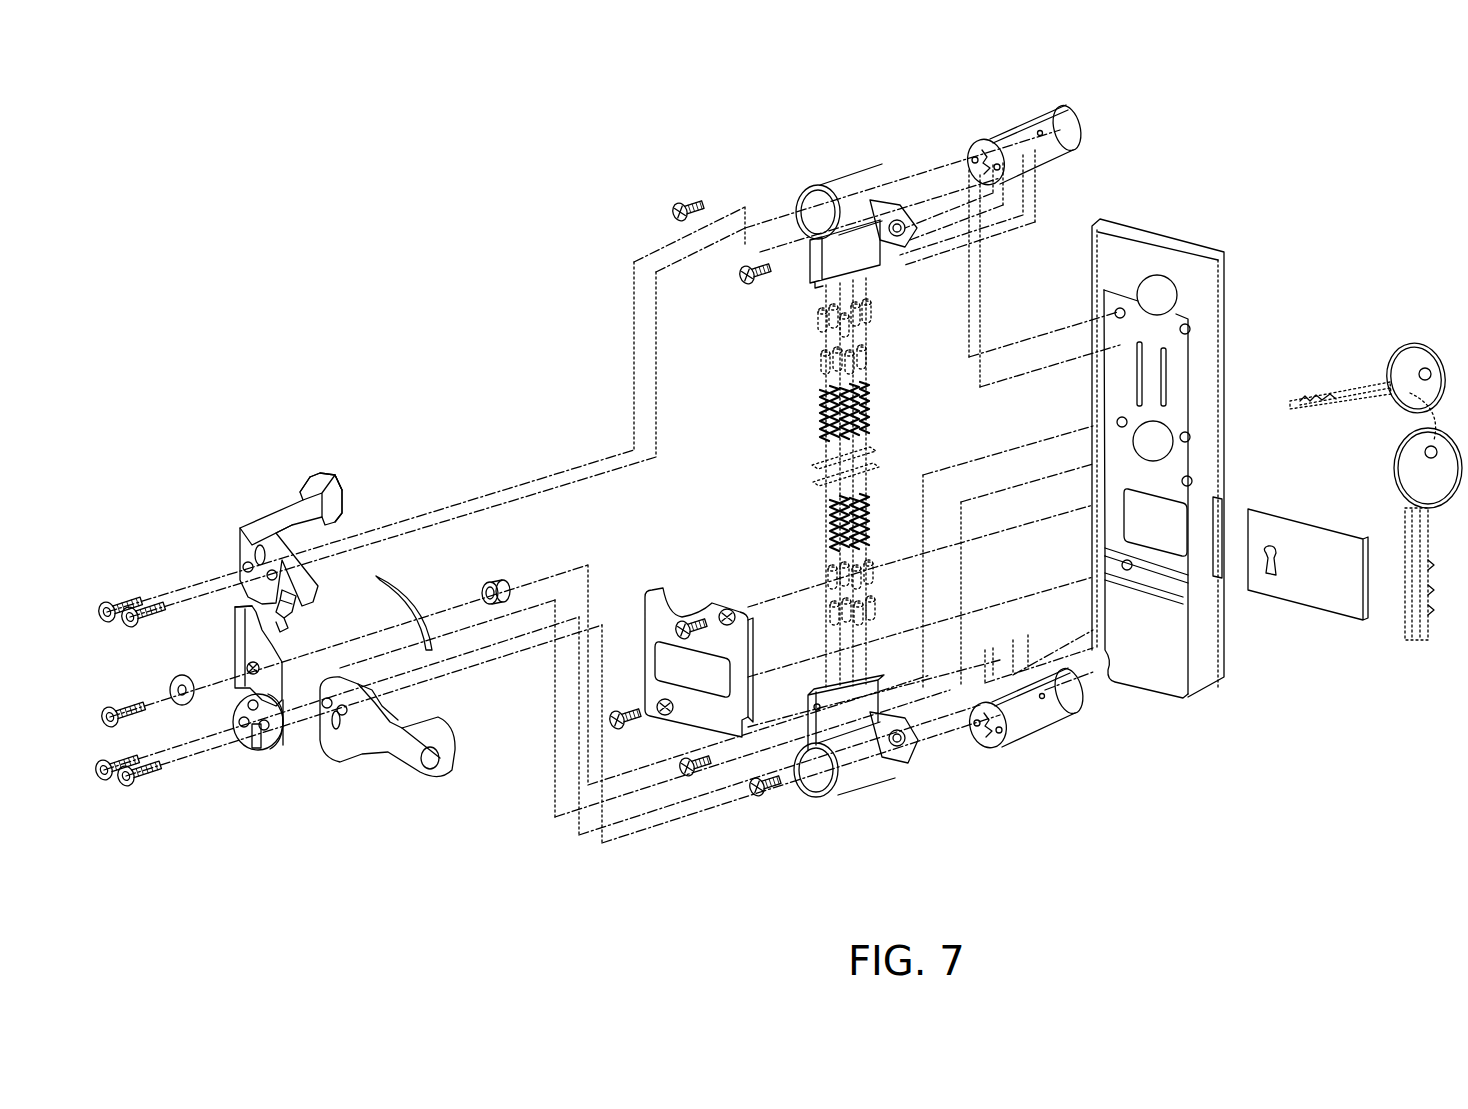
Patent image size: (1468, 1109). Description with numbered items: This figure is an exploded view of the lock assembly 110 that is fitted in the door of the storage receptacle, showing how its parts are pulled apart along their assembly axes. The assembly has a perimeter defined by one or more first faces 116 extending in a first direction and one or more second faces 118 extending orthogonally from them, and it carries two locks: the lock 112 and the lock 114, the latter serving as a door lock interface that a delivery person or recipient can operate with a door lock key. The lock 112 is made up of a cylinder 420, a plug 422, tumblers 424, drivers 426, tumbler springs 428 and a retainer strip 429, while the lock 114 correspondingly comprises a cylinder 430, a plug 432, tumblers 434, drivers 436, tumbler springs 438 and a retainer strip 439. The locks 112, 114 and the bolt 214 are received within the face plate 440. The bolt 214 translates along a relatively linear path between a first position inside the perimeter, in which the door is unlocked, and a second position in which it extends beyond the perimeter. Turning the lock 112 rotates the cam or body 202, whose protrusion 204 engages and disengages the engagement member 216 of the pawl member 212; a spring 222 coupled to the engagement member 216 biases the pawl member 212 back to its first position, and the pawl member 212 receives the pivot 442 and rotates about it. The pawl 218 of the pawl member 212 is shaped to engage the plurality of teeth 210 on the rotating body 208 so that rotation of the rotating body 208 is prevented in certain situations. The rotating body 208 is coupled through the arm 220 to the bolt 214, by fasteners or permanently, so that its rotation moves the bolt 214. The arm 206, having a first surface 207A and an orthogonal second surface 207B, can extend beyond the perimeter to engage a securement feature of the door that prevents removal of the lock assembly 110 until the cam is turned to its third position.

The lock assembly 110 is at (356, 156).
The lock 112 is at (866, 140).
The lock 114 is at (972, 780).
The first faces 116 is at (1213, 343).
The second faces 118 is at (1217, 245).
The body 202 is at (242, 524).
The protrusion 204 is at (290, 616).
The arm 206 is at (320, 488).
The first surface 207A is at (308, 484).
The second surface 207B is at (338, 484).
The rotating body 208 is at (264, 756).
The teeth 210 is at (238, 698).
The pawl member 212 is at (238, 632).
The bolt 214 is at (1336, 598).
The engagement member 216 is at (232, 612).
The pawl 218 is at (284, 752).
The arm 220 is at (352, 754).
The spring 222 is at (393, 578).
The cylinder 420 is at (846, 176).
The plug 422 is at (1036, 122).
The tumblers 424 is at (818, 318).
The drivers 426 is at (820, 365).
The tumbler springs 428 is at (818, 410).
The retainer strip 429 is at (870, 456).
The cylinder 430 is at (858, 772).
The plug 432 is at (1020, 735).
The tumblers 434 is at (830, 614).
The drivers 436 is at (866, 574).
The tumbler springs 438 is at (830, 522).
The retainer strip 439 is at (875, 467).
The face plate 440 is at (1130, 225).
The pivot 442 is at (498, 584).